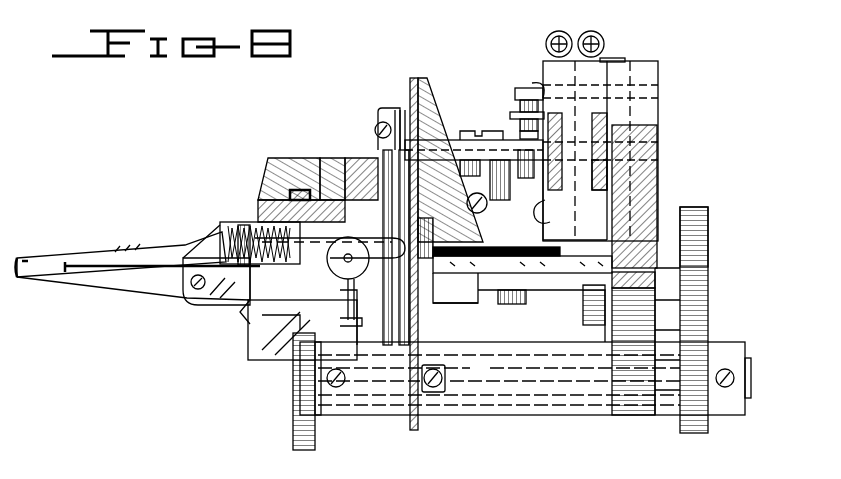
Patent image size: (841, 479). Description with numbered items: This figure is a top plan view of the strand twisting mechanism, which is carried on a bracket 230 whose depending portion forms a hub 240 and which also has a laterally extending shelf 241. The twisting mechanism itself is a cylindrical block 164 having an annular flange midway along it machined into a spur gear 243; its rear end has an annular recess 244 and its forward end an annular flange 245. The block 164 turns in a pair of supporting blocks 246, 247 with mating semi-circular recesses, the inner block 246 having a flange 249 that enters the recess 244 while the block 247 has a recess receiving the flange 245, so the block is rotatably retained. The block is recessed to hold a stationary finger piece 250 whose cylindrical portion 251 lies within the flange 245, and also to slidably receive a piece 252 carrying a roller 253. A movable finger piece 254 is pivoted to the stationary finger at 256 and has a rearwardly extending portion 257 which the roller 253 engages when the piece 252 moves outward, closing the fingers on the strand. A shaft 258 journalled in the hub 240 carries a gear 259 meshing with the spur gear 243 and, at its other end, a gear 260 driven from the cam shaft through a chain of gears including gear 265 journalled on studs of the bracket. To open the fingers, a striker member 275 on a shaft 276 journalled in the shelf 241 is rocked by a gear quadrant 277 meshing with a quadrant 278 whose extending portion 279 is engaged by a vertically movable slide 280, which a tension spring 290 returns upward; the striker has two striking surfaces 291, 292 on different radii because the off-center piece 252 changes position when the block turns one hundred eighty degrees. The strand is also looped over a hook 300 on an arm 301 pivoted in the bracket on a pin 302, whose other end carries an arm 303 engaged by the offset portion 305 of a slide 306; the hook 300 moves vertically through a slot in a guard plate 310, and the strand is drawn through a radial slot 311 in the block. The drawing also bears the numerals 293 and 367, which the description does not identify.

The cylindrical block 164 is at (270, 205).
The bracket 230 is at (657, 165).
The hub 240 is at (606, 414).
The shelf 241 is at (574, 228).
The spur gear 243 is at (301, 197).
The annular recess 244 is at (327, 185).
The annular flange 245 is at (292, 183).
The inner supporting block 246 is at (322, 158).
The supporting block 247 is at (268, 158).
The flange 249 is at (368, 320).
The stationary finger piece 250 is at (153, 253).
The cylindrical portion 251 is at (248, 312).
The piece 252 is at (365, 232).
The roller 253 is at (352, 283).
The movable finger piece 254 is at (140, 278).
The pivot 256 is at (192, 300).
The rearwardly extending portion 257 is at (350, 280).
The shaft 258 is at (292, 380).
The gear 259 is at (292, 427).
The gear 260 is at (695, 433).
The gear 265 is at (709, 266).
The striker member 275 is at (457, 303).
The shaft 276 is at (386, 120).
The gear quadrant 277 is at (378, 120).
The quadrant 278 is at (455, 140).
The extending portion 279 is at (527, 164).
The slide 280 is at (590, 180).
The tension spring 290 is at (588, 32).
The striking surface 291 is at (490, 250).
The striking surface 292 is at (512, 304).
The bolt 293 is at (594, 305).
The hook 300 is at (466, 205).
The arm 301 is at (560, 273).
The pin 302 is at (630, 61).
The arm 303 is at (522, 92).
The offset portion 305 is at (534, 129).
The slide 306 is at (556, 205).
The guard plate 310 is at (420, 78).
The slot 311 is at (303, 320).
The spring seat 367 is at (246, 222).